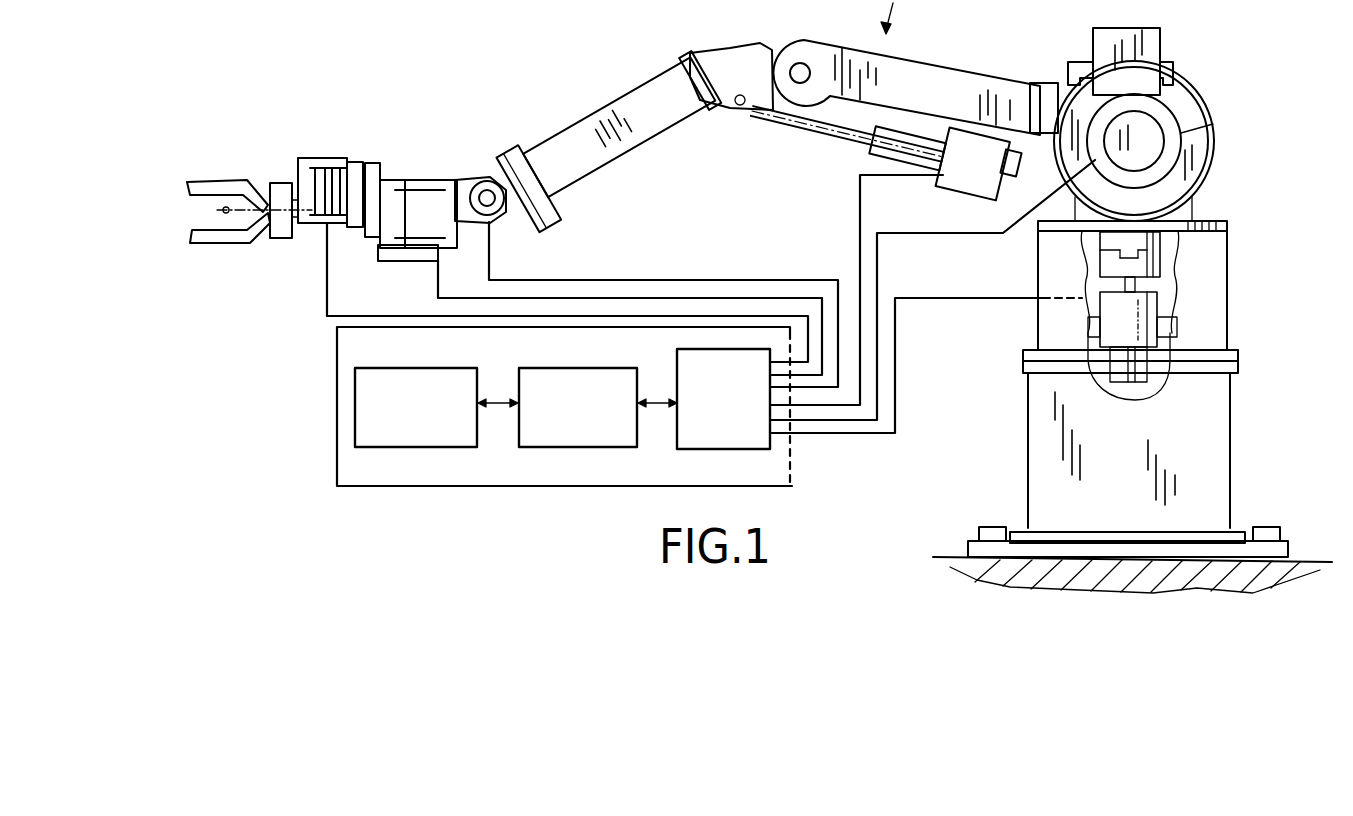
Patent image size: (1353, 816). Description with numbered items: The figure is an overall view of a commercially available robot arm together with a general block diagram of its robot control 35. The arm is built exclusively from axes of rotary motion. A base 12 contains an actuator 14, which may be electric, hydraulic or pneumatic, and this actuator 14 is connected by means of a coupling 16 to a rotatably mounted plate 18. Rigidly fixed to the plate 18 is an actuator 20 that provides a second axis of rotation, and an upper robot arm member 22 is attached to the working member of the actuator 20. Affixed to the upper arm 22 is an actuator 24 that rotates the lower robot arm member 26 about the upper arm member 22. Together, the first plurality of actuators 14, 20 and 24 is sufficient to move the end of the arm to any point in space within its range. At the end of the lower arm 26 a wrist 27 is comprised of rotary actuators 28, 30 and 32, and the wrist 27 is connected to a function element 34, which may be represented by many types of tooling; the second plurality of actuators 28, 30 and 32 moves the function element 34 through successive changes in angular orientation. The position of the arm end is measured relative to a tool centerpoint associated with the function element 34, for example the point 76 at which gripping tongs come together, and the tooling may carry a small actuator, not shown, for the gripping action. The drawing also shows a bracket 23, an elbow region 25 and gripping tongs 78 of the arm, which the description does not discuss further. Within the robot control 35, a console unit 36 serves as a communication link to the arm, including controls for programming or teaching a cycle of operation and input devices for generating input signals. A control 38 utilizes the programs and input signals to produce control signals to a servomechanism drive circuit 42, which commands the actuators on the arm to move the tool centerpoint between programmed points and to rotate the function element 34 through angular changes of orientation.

The base 12 is at (1230, 420).
The actuator 14 is at (1173, 300).
The coupling 16 is at (1160, 262).
The rotatably mounted plate 18 is at (1208, 222).
The actuator 20 is at (1212, 125).
The upper robot arm member 22 is at (923, 58).
The counterweight 23 is at (1184, 56).
The actuator 24 is at (972, 197).
The elbow joint 25 is at (793, 38).
The lower robot arm member 26 is at (641, 148).
The wrist 27 is at (321, 140).
The rotary actuator 28 is at (500, 220).
The rotary actuator 30 is at (403, 158).
The rotary actuator 32 is at (310, 223).
The function element 34 is at (217, 256).
The robot control 35 is at (614, 359).
The console unit 36 is at (454, 448).
The control 38 is at (620, 448).
The servomechanism drive circuit 42 is at (748, 449).
The point 76 is at (230, 205).
The gripper fingers 78 is at (192, 217).